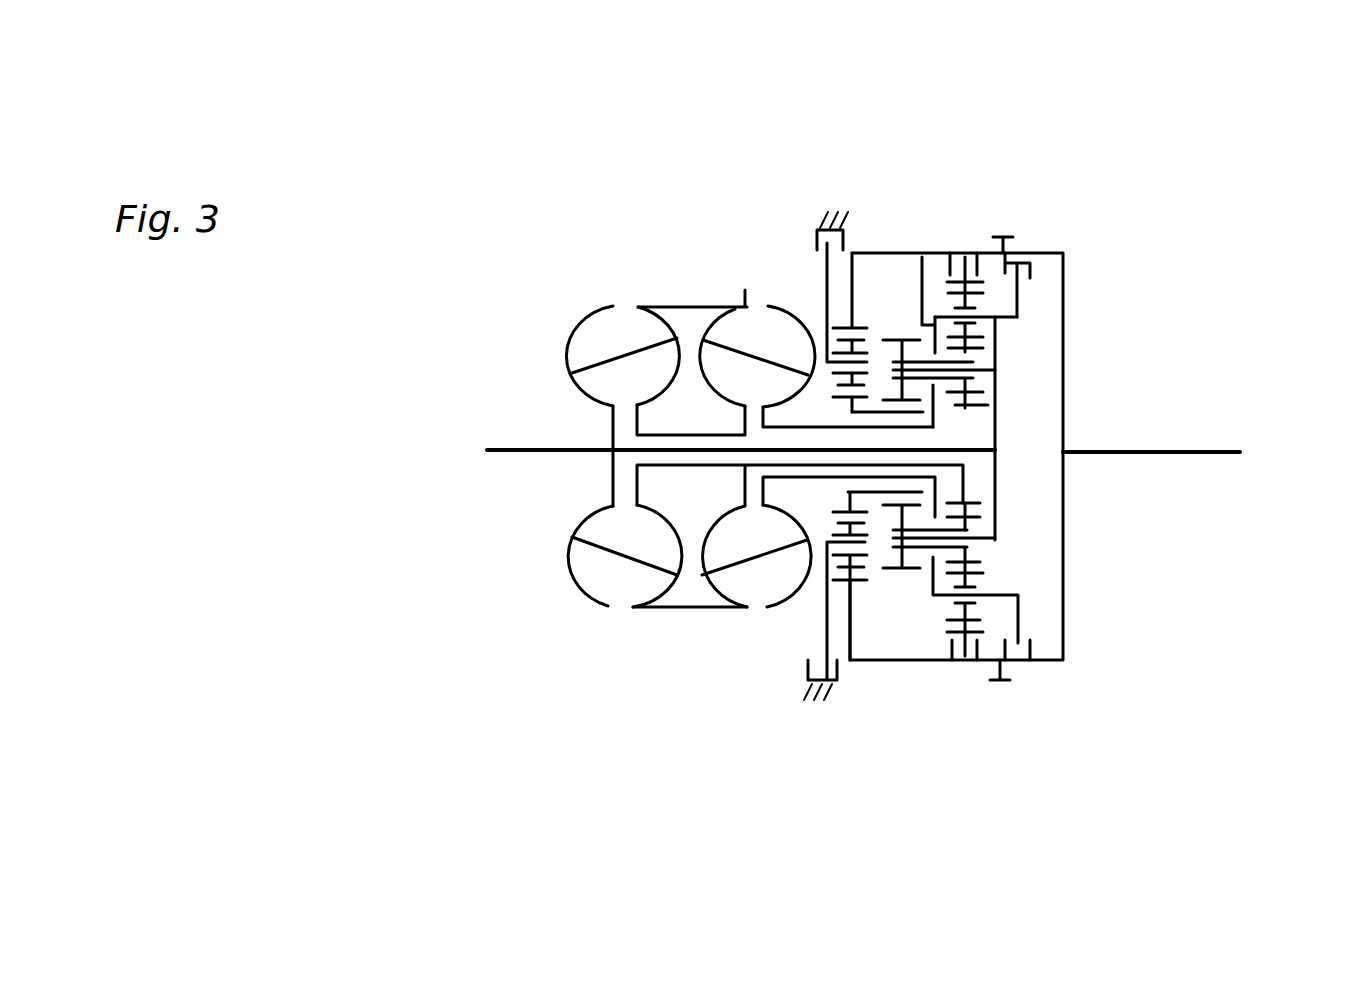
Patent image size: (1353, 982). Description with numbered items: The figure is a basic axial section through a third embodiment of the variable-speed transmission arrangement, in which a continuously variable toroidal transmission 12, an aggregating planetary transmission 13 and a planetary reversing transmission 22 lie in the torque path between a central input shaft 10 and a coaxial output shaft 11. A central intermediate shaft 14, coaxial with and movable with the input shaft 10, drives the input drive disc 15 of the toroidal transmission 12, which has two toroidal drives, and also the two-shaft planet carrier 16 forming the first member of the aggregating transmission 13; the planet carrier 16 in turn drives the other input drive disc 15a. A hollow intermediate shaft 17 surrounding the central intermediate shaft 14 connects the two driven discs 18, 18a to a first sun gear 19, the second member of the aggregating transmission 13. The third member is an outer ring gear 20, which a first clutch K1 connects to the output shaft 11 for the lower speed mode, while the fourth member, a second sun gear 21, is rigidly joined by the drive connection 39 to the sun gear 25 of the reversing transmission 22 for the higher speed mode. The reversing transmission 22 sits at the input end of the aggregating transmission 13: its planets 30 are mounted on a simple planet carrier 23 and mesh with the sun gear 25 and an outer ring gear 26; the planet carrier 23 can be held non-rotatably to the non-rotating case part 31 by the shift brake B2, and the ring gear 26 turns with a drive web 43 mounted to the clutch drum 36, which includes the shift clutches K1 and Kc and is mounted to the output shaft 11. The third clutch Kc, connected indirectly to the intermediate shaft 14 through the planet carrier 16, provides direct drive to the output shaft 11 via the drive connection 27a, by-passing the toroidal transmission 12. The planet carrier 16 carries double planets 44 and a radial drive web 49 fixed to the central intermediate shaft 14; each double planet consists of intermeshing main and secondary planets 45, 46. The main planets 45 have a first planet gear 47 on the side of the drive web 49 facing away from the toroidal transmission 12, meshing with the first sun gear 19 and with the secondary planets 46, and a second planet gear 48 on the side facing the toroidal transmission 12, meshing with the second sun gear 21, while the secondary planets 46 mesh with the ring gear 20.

The input shaft 10 is at (523, 452).
The output shaft 11 is at (1182, 450).
The continuously variable toroidal transmission 12 is at (661, 200).
The aggregating planetary transmission 13 is at (952, 173).
The central intermediate shaft 14 is at (623, 448).
The input drive disc 15 is at (575, 320).
The other input drive disc 15a is at (767, 608).
The two-shaft planet carrier 16 is at (990, 600).
The hollow intermediate shaft 17 is at (693, 467).
The driven disc 18 is at (638, 307).
The driven disc 18a is at (747, 288).
The first sun gear 19 is at (922, 413).
The outer ring gear 20 is at (947, 282).
The second sun gear 21 is at (967, 398).
The planetary reversing transmission 22 is at (775, 190).
The simple planet carrier 23 is at (820, 280).
The sun gear 25 is at (866, 512).
The outer ring gear 26 is at (863, 580).
The direct drive connection 27a is at (1080, 283).
The planets 30 is at (840, 522).
The non-rotating case part 31 is at (807, 703).
The clutch drum 36 is at (1047, 253).
The drive connection 39 is at (878, 412).
The drive web 43 is at (847, 622).
The double planets 44 is at (988, 567).
The main planets 45 is at (968, 527).
The secondary planets 46 is at (985, 621).
The first planet gear 47 is at (983, 348).
The second planet gear 48 is at (903, 340).
The radial drive web 49 is at (923, 270).
The shift brake B2 is at (812, 722).
The first clutch K1 is at (962, 682).
The third clutch Kc is at (1027, 682).